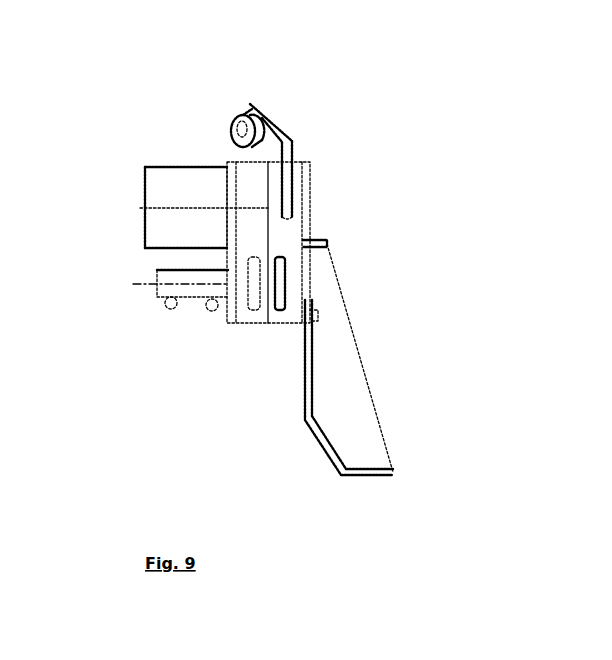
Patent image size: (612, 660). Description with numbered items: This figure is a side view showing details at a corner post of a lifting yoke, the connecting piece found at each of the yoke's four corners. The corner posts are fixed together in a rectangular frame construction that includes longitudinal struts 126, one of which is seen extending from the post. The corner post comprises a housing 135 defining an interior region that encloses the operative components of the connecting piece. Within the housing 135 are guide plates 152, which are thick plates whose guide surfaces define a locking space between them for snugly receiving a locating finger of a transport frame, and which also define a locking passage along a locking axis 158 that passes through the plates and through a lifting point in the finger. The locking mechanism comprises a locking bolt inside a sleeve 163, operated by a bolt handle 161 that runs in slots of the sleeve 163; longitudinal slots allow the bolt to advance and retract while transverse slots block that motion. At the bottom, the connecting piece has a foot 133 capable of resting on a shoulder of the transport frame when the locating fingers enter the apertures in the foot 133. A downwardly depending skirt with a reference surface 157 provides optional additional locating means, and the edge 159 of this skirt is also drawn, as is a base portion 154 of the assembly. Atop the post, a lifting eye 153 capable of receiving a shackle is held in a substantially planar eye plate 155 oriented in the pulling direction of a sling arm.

The longitudinal strut 126 is at (170, 187).
The foot 133 is at (272, 332).
The housing 135 is at (292, 240).
The guide plates 152 is at (258, 295).
The lifting eye 153 is at (237, 113).
The base portion 154 is at (213, 293).
The eye plate 155 is at (273, 135).
The reference surface 157 is at (310, 372).
The locking axis 158 is at (128, 285).
The edge 159 is at (337, 462).
The bolt handle 161 is at (172, 310).
The sleeve 163 is at (197, 300).